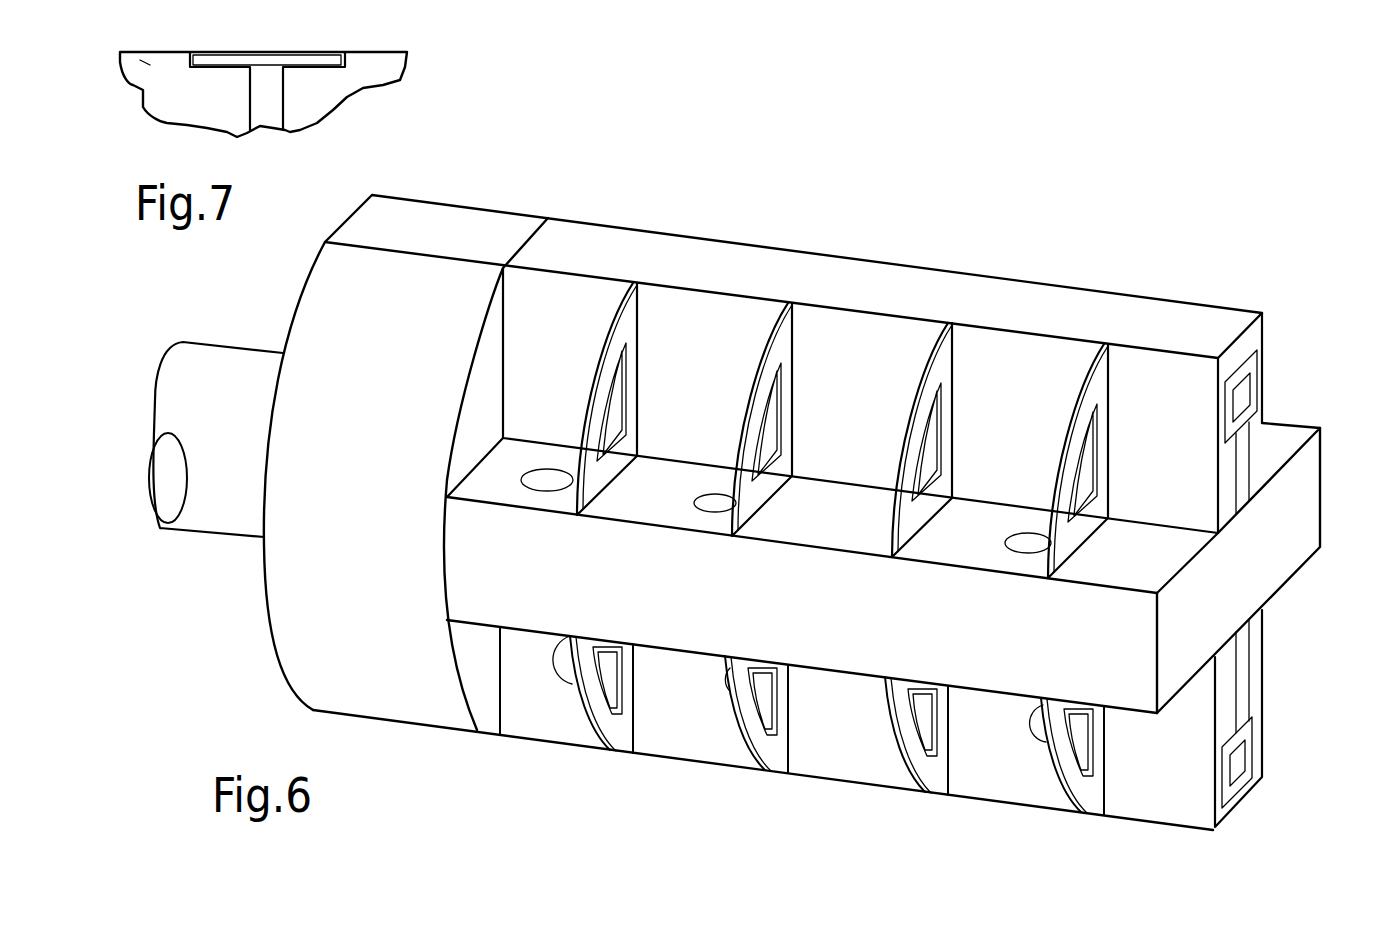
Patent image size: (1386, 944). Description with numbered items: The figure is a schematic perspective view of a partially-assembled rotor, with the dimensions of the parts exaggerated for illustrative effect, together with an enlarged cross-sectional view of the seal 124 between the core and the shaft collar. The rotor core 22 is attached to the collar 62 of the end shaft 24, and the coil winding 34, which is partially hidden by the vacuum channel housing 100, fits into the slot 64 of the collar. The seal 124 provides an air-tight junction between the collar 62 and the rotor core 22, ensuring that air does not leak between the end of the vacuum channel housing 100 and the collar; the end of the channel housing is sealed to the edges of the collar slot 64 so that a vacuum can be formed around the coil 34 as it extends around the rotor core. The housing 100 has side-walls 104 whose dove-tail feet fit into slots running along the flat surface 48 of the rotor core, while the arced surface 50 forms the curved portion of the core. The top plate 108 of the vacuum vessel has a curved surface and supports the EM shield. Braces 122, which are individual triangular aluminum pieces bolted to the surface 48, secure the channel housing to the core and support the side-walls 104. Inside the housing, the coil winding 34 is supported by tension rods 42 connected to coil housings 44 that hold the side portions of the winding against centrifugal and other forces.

In FIG. 7, the rotor core 22 is at (372, 62).
In FIG. 6, the rotor core 22 is at (1298, 520).
In FIG. 6, the end shaft 24 is at (203, 533).
In FIG. 6, the coil winding 34 is at (1247, 386).
In FIG. 6, the tension rods 42 is at (1233, 697).
In FIG. 6, the coil housings 44 is at (1227, 375).
In FIG. 6, the flat surface 48 is at (1287, 432).
In FIG. 6, the arced surface 50 is at (718, 609).
In FIG. 7, the collar 62 is at (157, 65).
In FIG. 6, the collar 62 is at (393, 697).
In FIG. 6, the slot 64 is at (505, 316).
In FIG. 6, the vacuum channel housing 100 is at (1100, 255).
In FIG. 6, the side-walls 104 is at (1262, 635).
In FIG. 6, the top plate 108 is at (930, 296).
In FIG. 6, the braces 122 is at (627, 297).
In FIG. 7, the seal 124 is at (262, 57).
In FIG. 6, the seal 124 is at (463, 717).